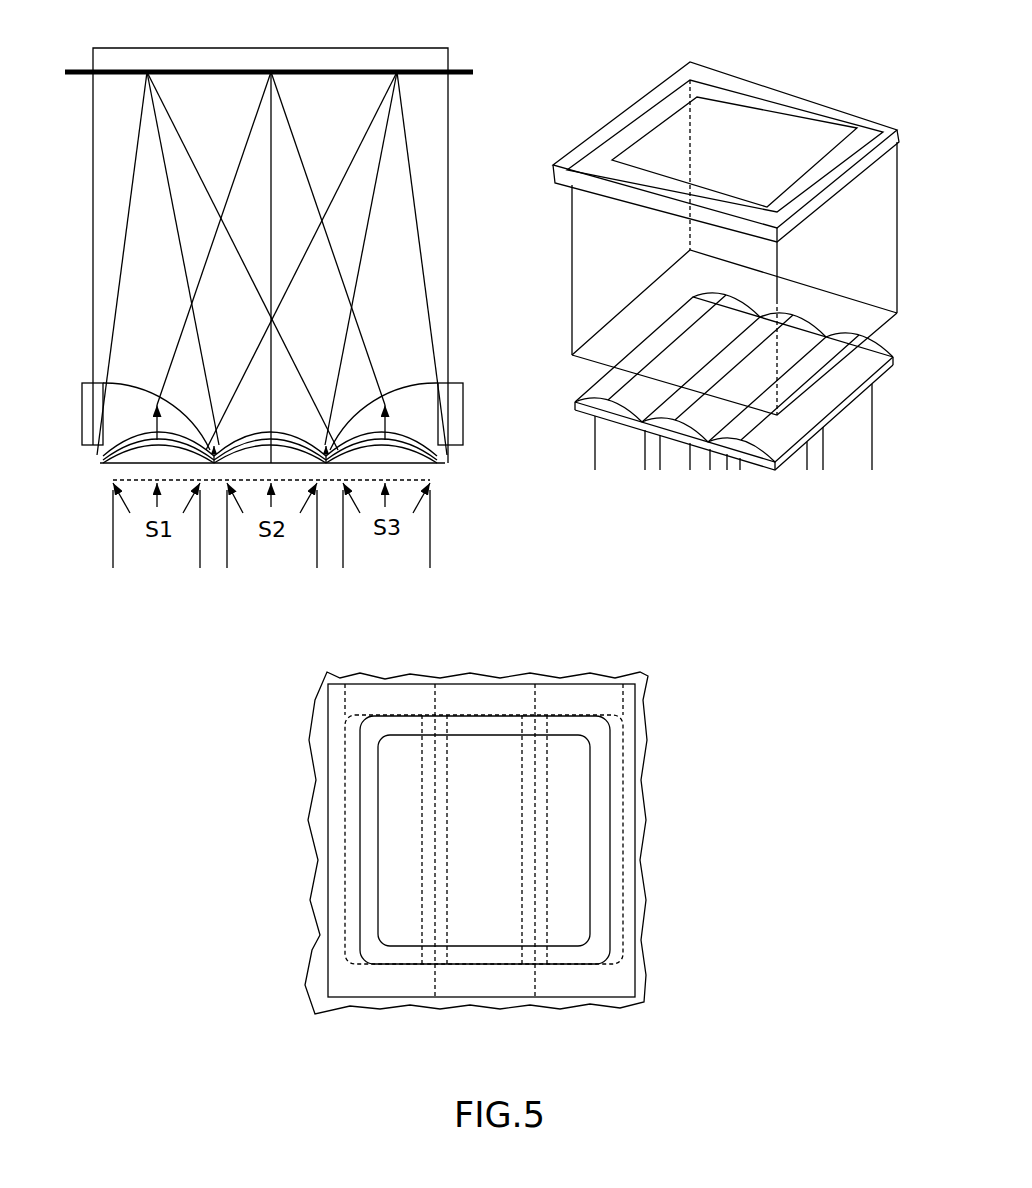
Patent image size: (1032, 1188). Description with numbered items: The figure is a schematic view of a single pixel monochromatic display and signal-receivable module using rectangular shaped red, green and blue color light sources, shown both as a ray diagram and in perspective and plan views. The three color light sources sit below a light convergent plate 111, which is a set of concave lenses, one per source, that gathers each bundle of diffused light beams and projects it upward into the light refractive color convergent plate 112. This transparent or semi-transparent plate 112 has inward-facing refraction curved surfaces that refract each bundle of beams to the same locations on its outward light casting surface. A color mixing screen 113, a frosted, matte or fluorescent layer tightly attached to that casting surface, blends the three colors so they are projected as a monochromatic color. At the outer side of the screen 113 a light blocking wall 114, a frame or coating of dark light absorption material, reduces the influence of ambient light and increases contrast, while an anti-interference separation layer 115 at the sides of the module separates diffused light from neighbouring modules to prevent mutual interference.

The light convergent plate 111 is at (575, 402).
The light refractive color convergent plate 112 is at (578, 257).
The color mixing screen 113 is at (563, 170).
The light blocking wall 114 is at (628, 100).
The anti-interference separation layer 115 is at (452, 427).